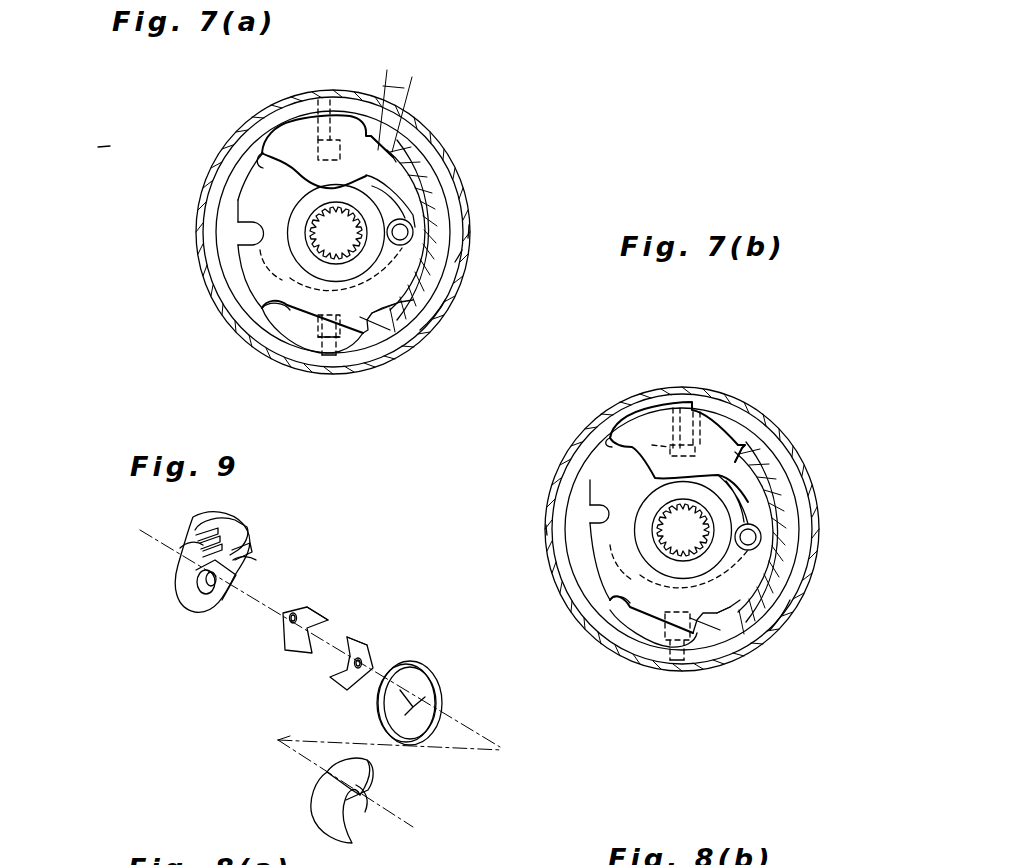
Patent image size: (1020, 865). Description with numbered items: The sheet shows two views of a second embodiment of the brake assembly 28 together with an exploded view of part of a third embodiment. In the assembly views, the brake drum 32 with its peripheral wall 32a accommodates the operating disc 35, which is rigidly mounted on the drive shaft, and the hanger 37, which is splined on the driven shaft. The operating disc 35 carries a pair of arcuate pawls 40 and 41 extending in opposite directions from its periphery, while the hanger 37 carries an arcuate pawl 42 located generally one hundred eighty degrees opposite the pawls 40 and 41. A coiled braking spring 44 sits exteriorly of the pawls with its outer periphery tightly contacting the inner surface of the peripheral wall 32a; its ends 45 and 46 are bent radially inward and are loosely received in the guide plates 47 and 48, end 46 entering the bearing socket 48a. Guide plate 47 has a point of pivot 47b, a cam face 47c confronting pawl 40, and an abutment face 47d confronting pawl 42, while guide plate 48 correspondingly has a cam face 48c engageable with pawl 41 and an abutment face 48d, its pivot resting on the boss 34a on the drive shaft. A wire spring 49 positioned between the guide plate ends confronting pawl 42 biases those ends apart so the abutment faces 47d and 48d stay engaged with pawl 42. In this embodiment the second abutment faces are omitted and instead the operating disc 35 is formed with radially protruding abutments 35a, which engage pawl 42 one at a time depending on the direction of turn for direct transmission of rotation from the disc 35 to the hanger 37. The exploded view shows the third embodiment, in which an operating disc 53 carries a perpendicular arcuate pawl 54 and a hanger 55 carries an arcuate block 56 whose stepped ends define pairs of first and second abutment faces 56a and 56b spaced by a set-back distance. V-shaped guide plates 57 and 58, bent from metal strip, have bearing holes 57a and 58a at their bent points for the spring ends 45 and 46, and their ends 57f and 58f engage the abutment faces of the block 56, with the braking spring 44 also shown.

In FIG. 7A, the brake assembly 28 is at (455, 128).
In FIG. 7B, the brake assembly 28 is at (655, 392).
In FIG. 7A, the brake drum 32 is at (470, 283).
In FIG. 7B, the brake drum 32 is at (806, 597).
In FIG. 7A, the peripheral wall 32a is at (470, 232).
In FIG. 7B, the peripheral wall 32a is at (552, 532).
In FIG. 7A, the boss 34a is at (273, 295).
In FIG. 7A, the operating disc 35 is at (300, 258).
In FIG. 7B, the operating disc 35 is at (683, 530).
In FIG. 7A, the abutment 35a is at (365, 128).
In FIG. 7B, the abutment 35a is at (740, 443).
In FIG. 7A, the hanger 37 is at (462, 248).
In FIG. 7A, the arcuate pawl 40 is at (247, 188).
In FIG. 7B, the arcuate pawl 40 is at (590, 482).
In FIG. 7A, the arcuate pawl 41 is at (287, 270).
In FIG. 7B, the arcuate pawl 41 is at (598, 556).
In FIG. 7A, the arcuate pawl 42 is at (415, 228).
In FIG. 7B, the arcuate pawl 42 is at (782, 528).
In FIG. 7A, the coiled braking spring 44 is at (428, 318).
In FIG. 7B, the coiled braking spring 44 is at (768, 623).
In FIG. 9, the coiled braking spring 44 is at (435, 680).
In FIG. 7A, the spring end 45 is at (320, 140).
In FIG. 7B, the spring end 45 is at (697, 413).
In FIG. 7A, the spring end 46 is at (333, 367).
In FIG. 7B, the spring end 46 is at (677, 655).
In FIG. 7A, the guide plate 47 is at (345, 118).
In FIG. 7B, the guide plate 47 is at (710, 425).
In FIG. 7A, the point of pivot 47b is at (313, 143).
In FIG. 7B, the point of pivot 47b is at (599, 514).
In FIG. 7A, the cam face 47c is at (262, 163).
In FIG. 7B, the cam face 47c is at (610, 450).
In FIG. 7A, the first abutment face 47d is at (390, 158).
In FIG. 7B, the first abutment face 47d is at (750, 463).
In FIG. 7A, the guide plate 48 is at (355, 345).
In FIG. 7B, the guide plate 48 is at (660, 632).
In FIG. 7A, the bearing socket 48a is at (320, 345).
In FIG. 7A, the cam face 48c is at (265, 317).
In FIG. 7B, the cam face 48c is at (610, 602).
In FIG. 7A, the first abutment face 48d is at (417, 343).
In FIG. 7B, the first abutment face 48d is at (748, 628).
In FIG. 7A, the wire spring 49 is at (428, 198).
In FIG. 7B, the wire spring 49 is at (765, 490).
In FIG. 9, the operating disc 53 is at (395, 775).
In FIG. 9, the arcuate pawl 54 is at (325, 810).
In FIG. 9, the hanger 55 is at (208, 605).
In FIG. 9, the arcuate block 56 is at (245, 525).
In FIG. 9, the first abutment face 56a is at (182, 550).
In FIG. 9, the second abutment face 56b is at (200, 532).
In FIG. 9, the guide plate 57 is at (295, 648).
In FIG. 9, the bearing hole 57a is at (290, 620).
In FIG. 9, the end of guide plate 57f is at (325, 617).
In FIG. 9, the guide plate 58 is at (340, 688).
In FIG. 9, the bearing hole 58a is at (372, 660).
In FIG. 9, the end of guide plate 58f is at (360, 662).